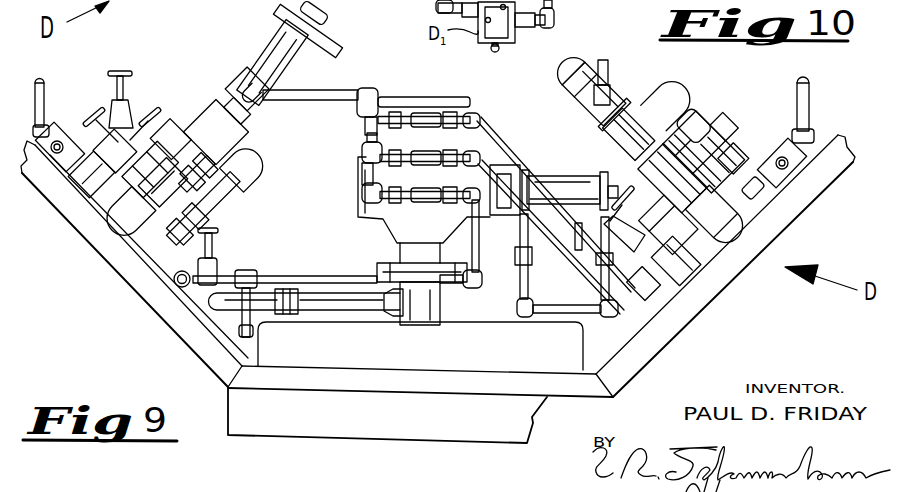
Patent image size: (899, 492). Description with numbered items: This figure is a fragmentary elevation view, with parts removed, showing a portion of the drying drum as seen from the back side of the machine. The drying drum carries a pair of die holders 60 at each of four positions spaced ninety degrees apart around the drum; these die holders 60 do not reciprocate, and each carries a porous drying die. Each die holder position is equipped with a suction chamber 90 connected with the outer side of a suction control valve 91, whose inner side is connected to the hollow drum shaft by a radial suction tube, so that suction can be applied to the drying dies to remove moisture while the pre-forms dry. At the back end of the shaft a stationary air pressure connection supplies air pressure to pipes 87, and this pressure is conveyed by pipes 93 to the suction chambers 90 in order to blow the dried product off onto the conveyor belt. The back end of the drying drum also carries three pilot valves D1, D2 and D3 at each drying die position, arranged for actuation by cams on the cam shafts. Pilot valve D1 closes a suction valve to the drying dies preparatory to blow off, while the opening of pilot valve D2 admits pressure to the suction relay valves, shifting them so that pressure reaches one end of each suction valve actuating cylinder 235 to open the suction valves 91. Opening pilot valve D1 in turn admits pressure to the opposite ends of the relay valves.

The die holder 60 is at (294, 425).
The pipe 87 is at (268, 48).
The suction chamber 90 is at (458, 355).
The suction control valve 91 is at (395, 223).
The pipe 93 is at (343, 298).
The suction valve actuating cylinder 235 is at (567, 176).
The pilot valve D1 is at (423, 116).
The pilot valve D2 is at (420, 155).
The pilot valve D3 is at (416, 197).